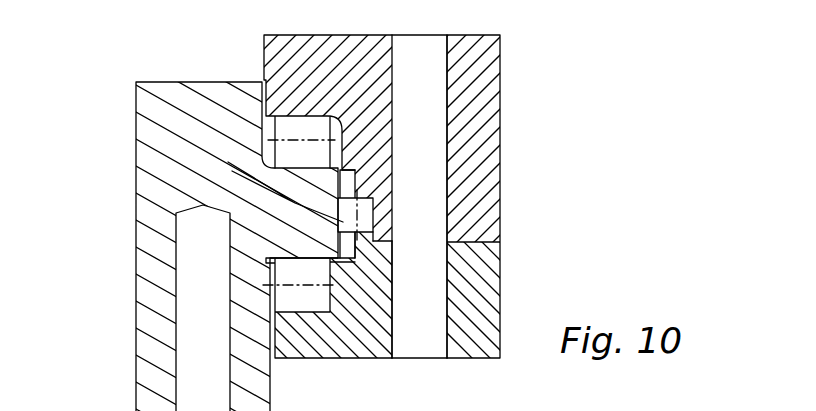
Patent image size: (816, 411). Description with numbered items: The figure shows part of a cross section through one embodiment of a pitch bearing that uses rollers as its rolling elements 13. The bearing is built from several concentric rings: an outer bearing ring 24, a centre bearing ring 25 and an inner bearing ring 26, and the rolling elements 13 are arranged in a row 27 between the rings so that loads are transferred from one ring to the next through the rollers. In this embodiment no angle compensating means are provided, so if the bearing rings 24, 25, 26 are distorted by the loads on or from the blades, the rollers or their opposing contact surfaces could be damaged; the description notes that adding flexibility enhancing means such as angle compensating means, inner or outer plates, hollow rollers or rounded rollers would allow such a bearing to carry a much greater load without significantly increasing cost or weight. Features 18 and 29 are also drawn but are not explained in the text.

The rolling element 13 is at (365, 207).
The bore channel 18 is at (422, 140).
The outer bearing ring 24 is at (483, 83).
The centre bearing ring 25 is at (428, 384).
The inner bearing ring 26 is at (160, 187).
The row of rolling elements 27 is at (308, 323).
The slit 29 is at (230, 165).